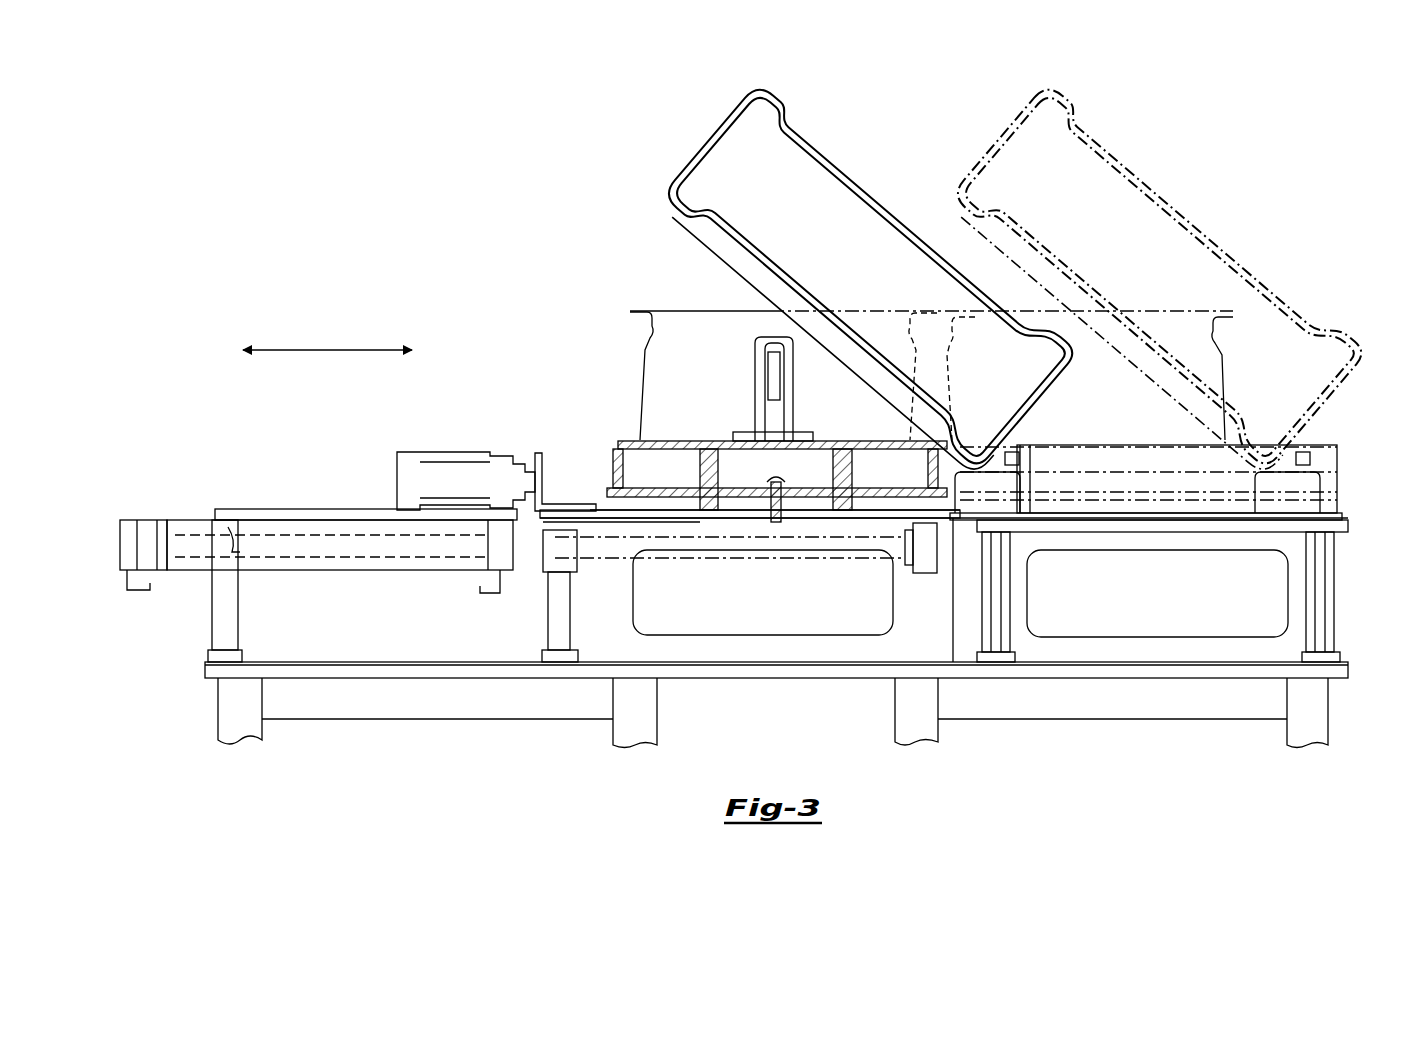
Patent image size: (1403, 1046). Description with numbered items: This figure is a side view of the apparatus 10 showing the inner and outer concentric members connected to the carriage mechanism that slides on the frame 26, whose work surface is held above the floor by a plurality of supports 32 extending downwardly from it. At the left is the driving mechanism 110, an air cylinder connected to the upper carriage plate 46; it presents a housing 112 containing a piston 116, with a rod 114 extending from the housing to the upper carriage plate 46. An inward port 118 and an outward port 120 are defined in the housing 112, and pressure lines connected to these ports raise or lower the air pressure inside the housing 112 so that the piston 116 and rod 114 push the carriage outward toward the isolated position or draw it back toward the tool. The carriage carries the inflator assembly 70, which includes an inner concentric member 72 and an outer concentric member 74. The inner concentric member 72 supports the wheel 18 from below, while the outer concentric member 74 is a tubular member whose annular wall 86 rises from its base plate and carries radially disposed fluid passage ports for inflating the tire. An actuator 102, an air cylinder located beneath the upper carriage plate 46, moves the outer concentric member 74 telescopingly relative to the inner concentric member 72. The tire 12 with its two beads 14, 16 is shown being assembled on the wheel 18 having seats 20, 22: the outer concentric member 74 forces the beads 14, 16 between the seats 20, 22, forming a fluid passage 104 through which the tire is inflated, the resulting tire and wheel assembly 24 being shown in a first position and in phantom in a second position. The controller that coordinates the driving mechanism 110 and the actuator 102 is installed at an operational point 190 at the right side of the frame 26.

The apparatus 10 is at (470, 333).
The tire 12 is at (860, 162).
The bead 14 is at (818, 163).
The bead 16 is at (716, 212).
The wheel 18 is at (665, 310).
The seat 20 is at (632, 320).
The seat 22 is at (640, 441).
The tire and wheel assembly 24 is at (926, 150).
The frame 26 is at (742, 678).
The supports 32 is at (240, 730).
The upper carriage plate 46 is at (585, 504).
The inflator assembly 70 is at (756, 340).
The inner concentric member 72 is at (690, 440).
The outer concentric member 74 is at (650, 488).
The annular wall 86 is at (612, 462).
The actuator 102 is at (782, 500).
The fluid passage 104 is at (466, 458).
The driving mechanism 110 is at (305, 548).
The housing 112 is at (178, 518).
The rod 114 is at (340, 558).
The piston 116 is at (155, 580).
The inward port 118 is at (140, 597).
The outward port 120 is at (488, 596).
The operational point 190 is at (1345, 492).